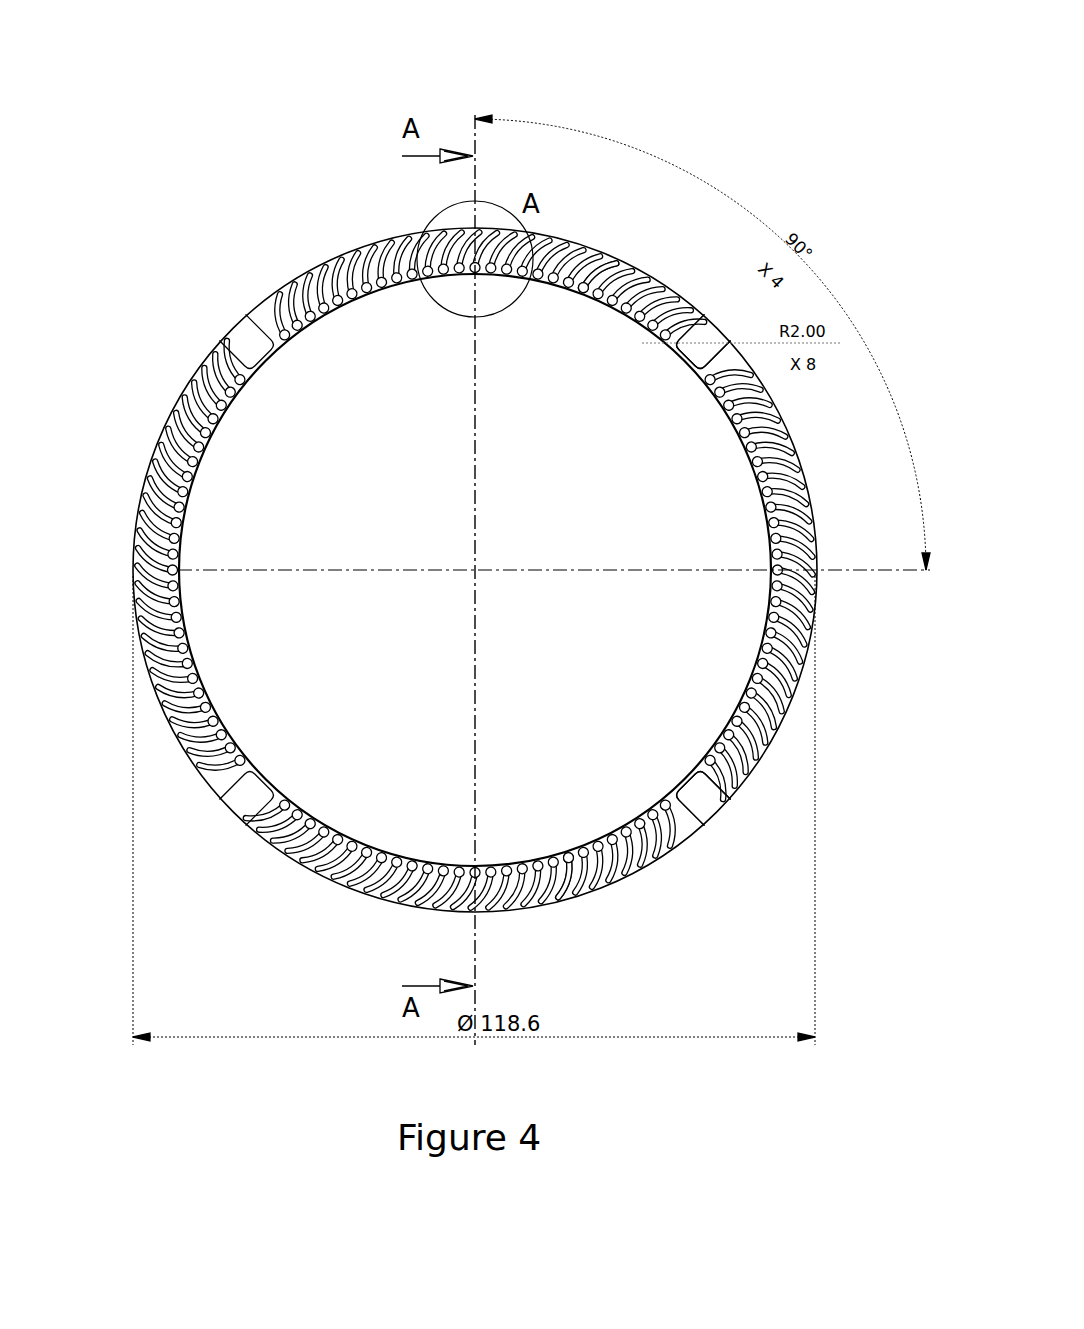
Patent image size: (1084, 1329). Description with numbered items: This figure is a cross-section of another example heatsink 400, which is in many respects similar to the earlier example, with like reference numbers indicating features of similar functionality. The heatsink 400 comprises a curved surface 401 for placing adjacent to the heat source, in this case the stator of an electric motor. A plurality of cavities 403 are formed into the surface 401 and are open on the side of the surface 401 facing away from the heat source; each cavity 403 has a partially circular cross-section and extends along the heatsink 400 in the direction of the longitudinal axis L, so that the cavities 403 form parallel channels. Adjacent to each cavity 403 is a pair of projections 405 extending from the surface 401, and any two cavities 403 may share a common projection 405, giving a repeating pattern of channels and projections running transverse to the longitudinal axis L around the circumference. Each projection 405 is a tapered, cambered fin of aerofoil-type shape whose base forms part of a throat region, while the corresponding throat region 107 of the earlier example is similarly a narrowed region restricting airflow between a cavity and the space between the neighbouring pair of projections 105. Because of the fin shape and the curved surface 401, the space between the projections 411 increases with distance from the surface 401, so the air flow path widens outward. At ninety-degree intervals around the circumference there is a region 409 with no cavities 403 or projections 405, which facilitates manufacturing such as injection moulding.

The projection 105 is at (411, 13).
The throat region 107 is at (584, 263).
The heatsink 400 is at (207, 156).
The surface 401 is at (760, 643).
The cavity 403 is at (650, 858).
The projection 405 is at (650, 283).
The region 409 is at (700, 792).
The space between the projections 411 is at (585, 890).
The longitudinal axis L is at (475, 570).